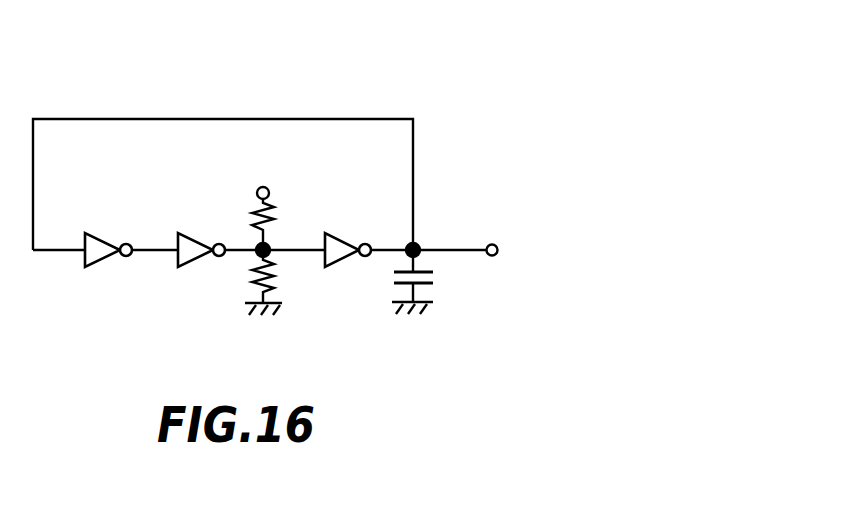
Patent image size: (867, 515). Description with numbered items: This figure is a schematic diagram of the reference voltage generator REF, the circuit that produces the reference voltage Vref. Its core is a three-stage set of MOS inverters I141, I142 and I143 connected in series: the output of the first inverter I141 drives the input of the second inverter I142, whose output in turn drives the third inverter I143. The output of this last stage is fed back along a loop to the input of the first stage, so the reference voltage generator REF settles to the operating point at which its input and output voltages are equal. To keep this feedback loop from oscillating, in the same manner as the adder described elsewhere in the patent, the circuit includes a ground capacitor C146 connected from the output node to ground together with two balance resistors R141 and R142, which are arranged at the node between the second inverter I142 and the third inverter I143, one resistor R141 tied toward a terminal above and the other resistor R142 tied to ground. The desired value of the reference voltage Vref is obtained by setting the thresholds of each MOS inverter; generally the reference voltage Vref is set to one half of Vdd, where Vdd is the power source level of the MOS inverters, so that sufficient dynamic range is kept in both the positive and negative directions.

The reference voltage generator REF is at (425, 82).
The MOS inverter I141 is at (84, 266).
The MOS inverter I142 is at (182, 233).
The MOS inverter I143 is at (354, 262).
The balance resistor R141 is at (252, 201).
The balance resistor R142 is at (251, 281).
The ground capacitor C146 is at (447, 285).
The power source level Vdd is at (360, 211).
The reference voltage Vref is at (541, 244).